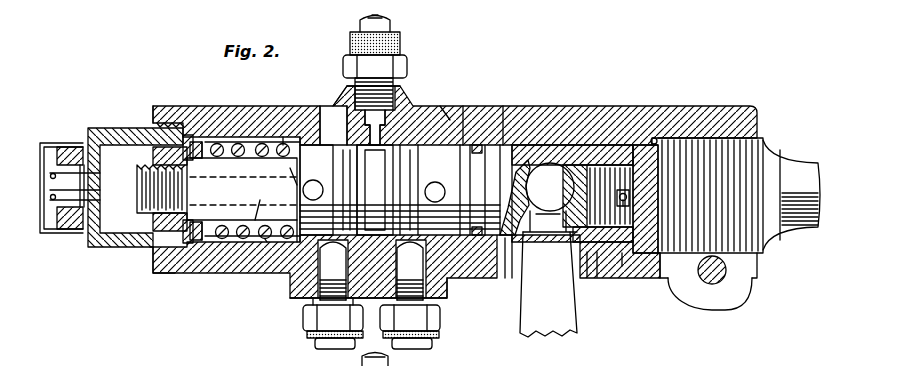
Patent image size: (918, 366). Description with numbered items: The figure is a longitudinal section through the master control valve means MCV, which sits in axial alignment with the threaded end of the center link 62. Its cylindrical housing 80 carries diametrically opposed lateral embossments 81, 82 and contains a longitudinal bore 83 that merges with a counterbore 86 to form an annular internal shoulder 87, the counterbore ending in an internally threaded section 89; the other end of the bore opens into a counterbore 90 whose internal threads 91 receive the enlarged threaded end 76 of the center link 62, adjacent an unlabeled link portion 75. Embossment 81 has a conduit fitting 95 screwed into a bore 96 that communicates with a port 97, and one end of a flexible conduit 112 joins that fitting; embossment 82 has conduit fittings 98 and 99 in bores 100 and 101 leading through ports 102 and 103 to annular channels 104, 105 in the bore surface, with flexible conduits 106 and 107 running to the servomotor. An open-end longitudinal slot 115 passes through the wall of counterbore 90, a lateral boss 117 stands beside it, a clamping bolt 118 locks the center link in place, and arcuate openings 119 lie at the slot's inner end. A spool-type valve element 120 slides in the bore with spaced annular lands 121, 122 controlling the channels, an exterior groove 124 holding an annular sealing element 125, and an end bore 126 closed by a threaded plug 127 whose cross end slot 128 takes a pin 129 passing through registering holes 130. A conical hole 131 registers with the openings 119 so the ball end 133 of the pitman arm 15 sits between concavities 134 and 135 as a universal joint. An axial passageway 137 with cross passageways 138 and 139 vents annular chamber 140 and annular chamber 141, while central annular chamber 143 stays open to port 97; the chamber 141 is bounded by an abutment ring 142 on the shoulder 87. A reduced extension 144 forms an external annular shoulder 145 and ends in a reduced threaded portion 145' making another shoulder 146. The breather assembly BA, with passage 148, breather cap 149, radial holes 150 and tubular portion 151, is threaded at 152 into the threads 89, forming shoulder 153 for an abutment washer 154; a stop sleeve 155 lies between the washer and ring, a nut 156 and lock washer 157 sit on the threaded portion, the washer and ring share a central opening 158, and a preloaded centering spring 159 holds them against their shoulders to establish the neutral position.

The pitman arm 15 is at (521, 320).
The center link 62 is at (797, 230).
The nipple 75 is at (780, 155).
The enlarged threaded end 76 is at (760, 138).
The cylindrical housing 80 is at (168, 106).
The lateral embossment 81 is at (400, 84).
The lateral embossment 82 is at (440, 305).
The longitudinal bore 83 is at (476, 107).
The counterbore 86 is at (259, 145).
The annular internal shoulder 87 is at (308, 124).
The internally threaded section 89 is at (150, 123).
The counterbore 90 is at (542, 132).
The internal threads 91 is at (655, 137).
The conduit fitting 95 is at (392, 76).
The bore 96 is at (403, 100).
The port 97 is at (386, 118).
The conduit fitting 98 is at (303, 318).
The conduit fitting 99 is at (440, 322).
The bore 100 is at (303, 290).
The bore 101 is at (397, 277).
The port 102 is at (305, 272).
The port 103 is at (438, 283).
The annular channel 104 is at (327, 245).
The annular channel 105 is at (450, 110).
The flexible conduit 106 is at (315, 340).
The flexible conduit 107 is at (432, 341).
The flexible conduit 112 is at (400, 32).
The longitudinal slot 115 is at (637, 272).
The lateral boss 117 is at (697, 302).
The clamping bolt 118 is at (712, 285).
The arcuate openings 119 is at (582, 266).
The spool-type valve element 120 is at (243, 189).
The annular land 121 is at (337, 166).
The annular land 122 is at (397, 188).
The exterior groove 124 is at (478, 178).
The annular sealing element 125 is at (490, 120).
The end bore 126 is at (581, 145).
The threaded plug 127 is at (610, 165).
The cross end slot 128 is at (630, 190).
The pin 129 is at (625, 208).
The registering holes 130 is at (627, 197).
The conical hole 131 is at (514, 262).
The ball end 133 is at (550, 187).
The concavity 134 is at (527, 193).
The concavity 135 is at (561, 237).
The axial passageway 137 is at (260, 200).
The cross passageway 138 is at (313, 200).
The cross passageway 139 is at (432, 240).
The annular chamber 140 is at (440, 243).
The annular chamber 141 is at (333, 125).
The abutment ring 142 is at (300, 248).
The central annular chamber 143 is at (380, 147).
The reduced extension 144 is at (211, 224).
The external annular shoulder 145 is at (273, 171).
The reduced threaded portion 145' is at (139, 190).
The annular shoulder 146 is at (215, 138).
The passage 148 is at (96, 172).
The breather cap 149 is at (45, 143).
The radial holes 150 is at (90, 190).
The tubular portion 151 is at (73, 162).
The threads 152 is at (150, 258).
The annular shoulder 153 is at (197, 142).
The abutment washer 154 is at (165, 268).
The stop sleeve 155 is at (246, 135).
The nut 156 is at (140, 164).
The lock washer 157 is at (189, 135).
The central opening 158 is at (285, 137).
The centering spring 159 is at (267, 240).
The master control valve means MCV is at (147, 86).
The breather assembly BA is at (92, 115).